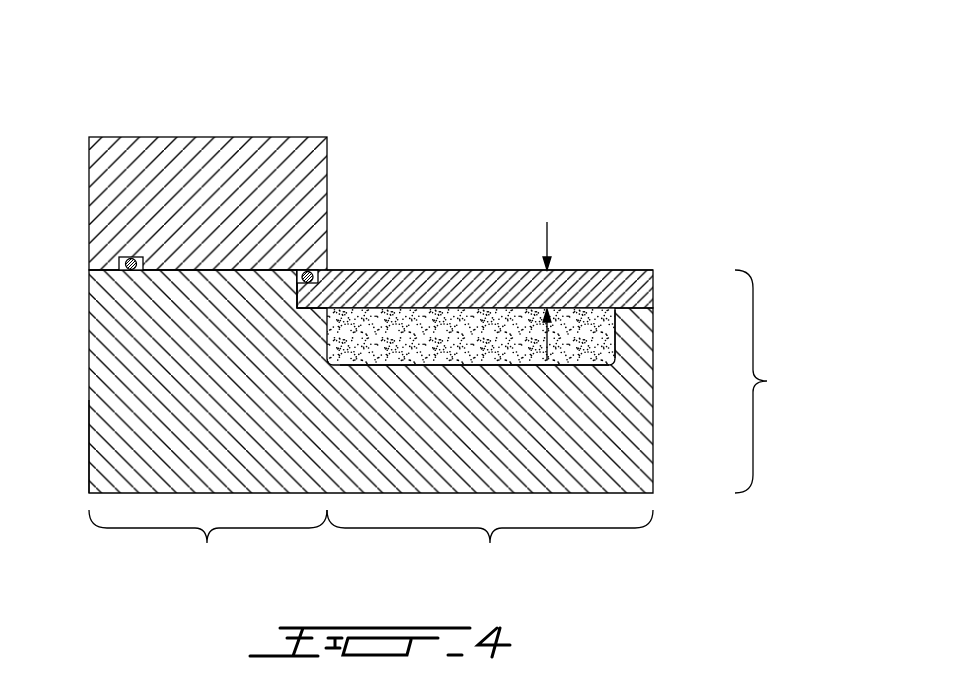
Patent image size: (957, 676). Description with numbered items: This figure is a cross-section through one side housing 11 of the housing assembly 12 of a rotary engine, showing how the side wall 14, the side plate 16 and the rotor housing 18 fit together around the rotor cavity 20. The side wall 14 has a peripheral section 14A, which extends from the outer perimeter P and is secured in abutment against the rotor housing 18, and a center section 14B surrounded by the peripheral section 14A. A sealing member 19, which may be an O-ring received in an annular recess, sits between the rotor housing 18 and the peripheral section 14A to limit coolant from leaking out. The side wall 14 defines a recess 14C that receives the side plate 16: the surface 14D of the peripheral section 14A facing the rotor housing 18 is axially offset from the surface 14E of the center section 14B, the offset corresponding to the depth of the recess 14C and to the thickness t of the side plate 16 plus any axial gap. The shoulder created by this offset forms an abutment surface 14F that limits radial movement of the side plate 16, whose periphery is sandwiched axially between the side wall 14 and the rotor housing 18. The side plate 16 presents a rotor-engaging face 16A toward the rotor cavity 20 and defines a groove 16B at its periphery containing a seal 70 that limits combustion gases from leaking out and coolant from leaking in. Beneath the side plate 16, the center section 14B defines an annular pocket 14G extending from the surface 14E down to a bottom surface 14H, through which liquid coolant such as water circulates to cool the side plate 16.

The side housing 11 is at (767, 381).
The housing assembly 12 is at (507, 145).
The side wall 14 is at (120, 468).
The peripheral section 14A is at (208, 545).
The center section 14B is at (490, 545).
The recess 14C is at (630, 310).
The surface of the peripheral section 14D is at (172, 271).
The surface of the center section 14E is at (308, 308).
The abutment surface 14F is at (298, 294).
The pocket 14G is at (588, 366).
The bottom surface of the pocket 14H is at (413, 367).
The side plate 16 is at (598, 292).
The rotor-engaging face 16A is at (378, 270).
The groove 16B is at (310, 268).
The seal 70 is at (310, 268).
The rotor housing 18 is at (143, 137).
The sealing member 19 is at (119, 258).
The rotor cavity 20 is at (474, 207).
The outer perimeter P is at (89, 432).
The thickness of the side plate t is at (547, 232).